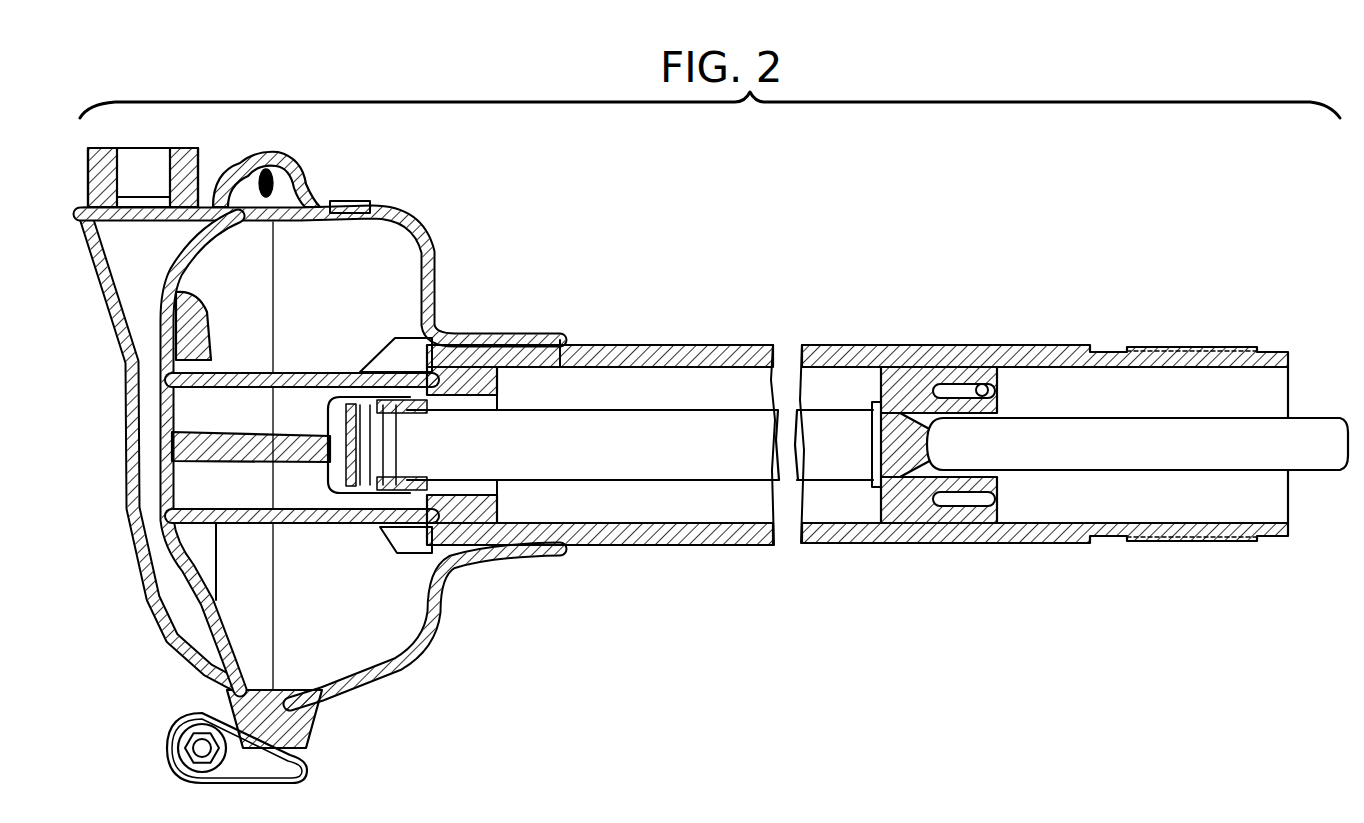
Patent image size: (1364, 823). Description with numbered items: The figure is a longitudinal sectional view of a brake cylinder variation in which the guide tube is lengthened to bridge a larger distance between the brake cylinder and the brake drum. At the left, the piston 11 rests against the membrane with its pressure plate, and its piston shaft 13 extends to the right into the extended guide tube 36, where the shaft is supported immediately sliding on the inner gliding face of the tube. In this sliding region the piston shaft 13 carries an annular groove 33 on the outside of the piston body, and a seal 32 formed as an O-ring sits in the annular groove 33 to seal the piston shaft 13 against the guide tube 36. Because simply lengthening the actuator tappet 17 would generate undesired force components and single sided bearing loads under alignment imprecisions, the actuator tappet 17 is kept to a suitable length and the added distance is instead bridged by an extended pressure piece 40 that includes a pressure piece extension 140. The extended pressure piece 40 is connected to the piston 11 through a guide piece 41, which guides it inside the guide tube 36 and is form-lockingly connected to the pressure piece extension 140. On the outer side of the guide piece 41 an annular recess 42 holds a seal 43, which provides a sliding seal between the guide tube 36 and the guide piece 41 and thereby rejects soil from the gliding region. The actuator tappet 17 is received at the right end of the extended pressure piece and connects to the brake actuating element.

The piston 11 is at (318, 372).
The piston shaft 13 is at (282, 370).
The actuator tappet 17 is at (1058, 456).
The seal 32 is at (470, 375).
The annular groove 33 is at (490, 397).
The extended guide tube 36 is at (652, 545).
The extended pressure piece 40 is at (745, 465).
The guide piece 41 is at (920, 515).
The annular recess 42 is at (995, 396).
The seal 43 is at (975, 385).
The pressure piece extension 140 is at (842, 460).